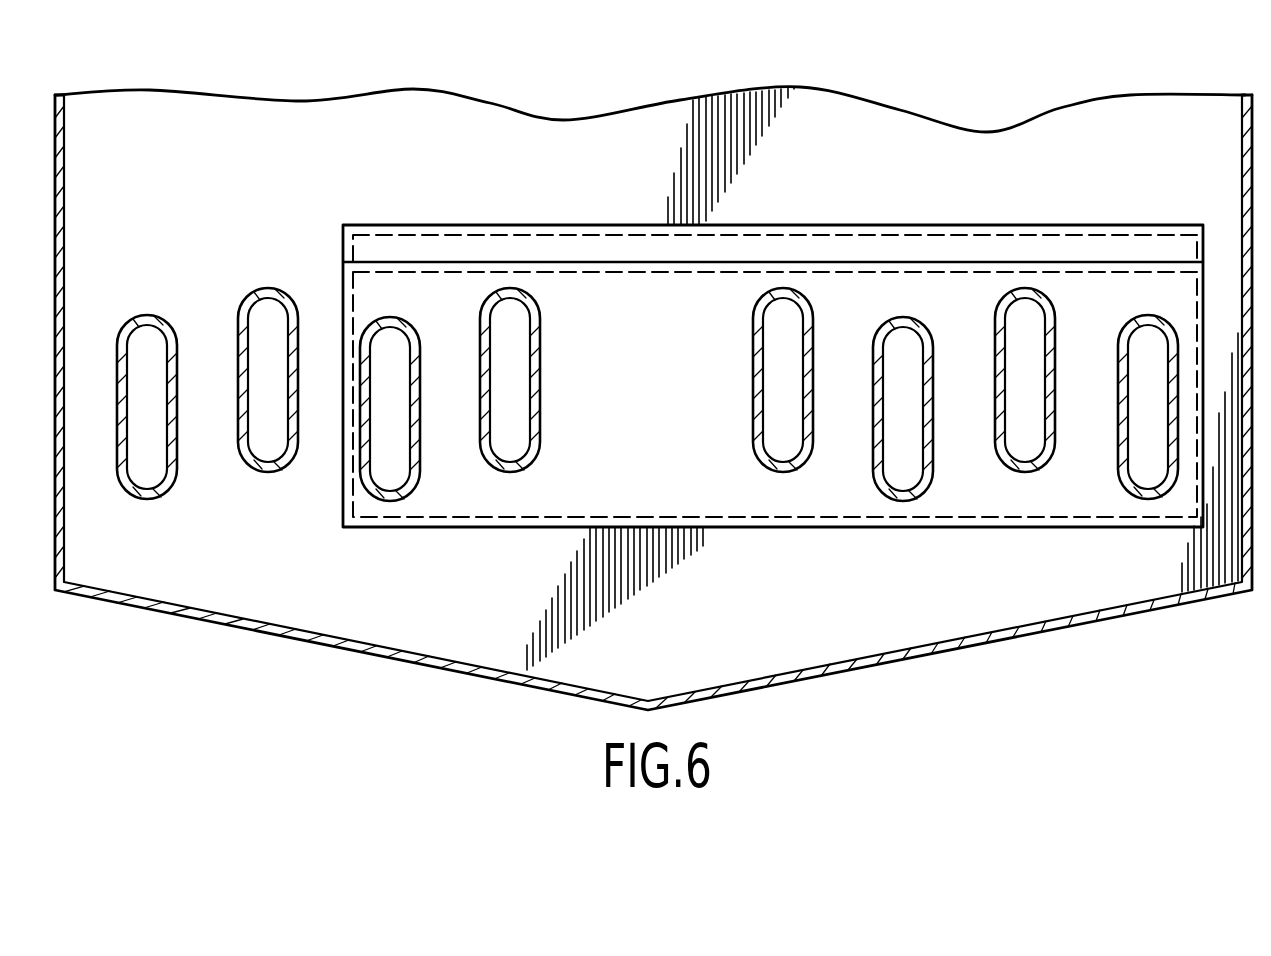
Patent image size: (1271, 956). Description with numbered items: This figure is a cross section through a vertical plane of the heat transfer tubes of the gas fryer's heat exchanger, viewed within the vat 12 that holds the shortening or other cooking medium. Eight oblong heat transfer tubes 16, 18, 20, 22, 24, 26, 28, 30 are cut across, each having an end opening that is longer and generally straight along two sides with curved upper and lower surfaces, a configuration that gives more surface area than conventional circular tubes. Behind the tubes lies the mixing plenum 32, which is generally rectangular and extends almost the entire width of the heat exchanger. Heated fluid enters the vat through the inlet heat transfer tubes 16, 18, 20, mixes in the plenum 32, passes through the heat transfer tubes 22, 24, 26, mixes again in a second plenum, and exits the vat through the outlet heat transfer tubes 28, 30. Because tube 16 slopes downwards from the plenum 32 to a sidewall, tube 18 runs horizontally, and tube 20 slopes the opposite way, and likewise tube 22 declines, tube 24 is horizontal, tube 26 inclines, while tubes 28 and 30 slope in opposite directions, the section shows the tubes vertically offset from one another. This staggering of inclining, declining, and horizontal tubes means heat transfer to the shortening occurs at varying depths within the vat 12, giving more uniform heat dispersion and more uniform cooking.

The vat 12 is at (1183, 113).
The inlet heat transfer tube 16 is at (1147, 497).
The inlet heat transfer tube 18 is at (1027, 470).
The inlet heat transfer tube 20 is at (903, 500).
The heat transfer tube 22 is at (783, 473).
The heat transfer tube 24 is at (510, 472).
The heat transfer tube 26 is at (390, 500).
The outlet heat transfer tube 28 is at (268, 472).
The outlet heat transfer tube 30 is at (147, 500).
The mixing plenum 32 is at (636, 487).